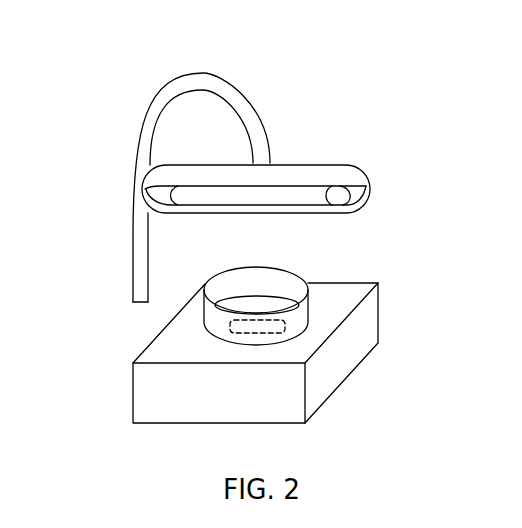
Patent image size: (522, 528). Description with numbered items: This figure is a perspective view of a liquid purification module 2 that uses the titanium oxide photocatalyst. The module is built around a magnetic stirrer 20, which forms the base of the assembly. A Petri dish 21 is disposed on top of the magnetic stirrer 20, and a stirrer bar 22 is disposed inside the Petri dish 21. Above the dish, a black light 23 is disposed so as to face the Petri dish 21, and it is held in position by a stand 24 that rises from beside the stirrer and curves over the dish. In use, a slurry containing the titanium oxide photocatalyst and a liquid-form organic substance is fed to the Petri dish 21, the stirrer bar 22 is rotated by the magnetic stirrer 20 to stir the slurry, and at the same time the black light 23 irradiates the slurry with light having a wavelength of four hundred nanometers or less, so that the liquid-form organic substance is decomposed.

The liquid purification module 2 is at (287, 107).
The magnetic stirrer 20 is at (343, 365).
The Petri dish 21 is at (285, 326).
The stirrer bar 22 is at (308, 307).
The black light 23 is at (365, 187).
The stand 24 is at (134, 263).